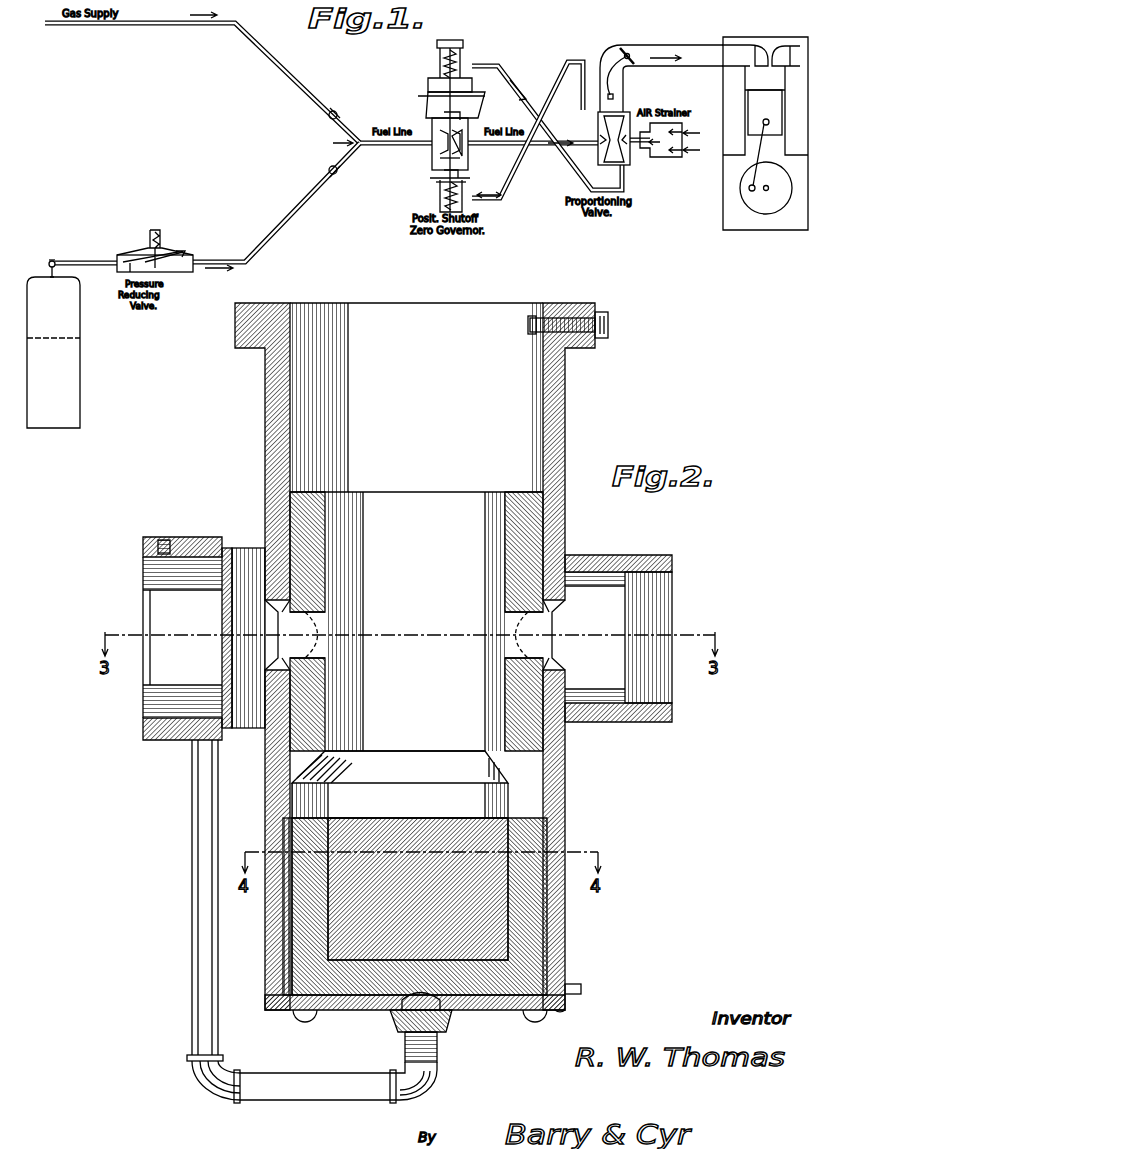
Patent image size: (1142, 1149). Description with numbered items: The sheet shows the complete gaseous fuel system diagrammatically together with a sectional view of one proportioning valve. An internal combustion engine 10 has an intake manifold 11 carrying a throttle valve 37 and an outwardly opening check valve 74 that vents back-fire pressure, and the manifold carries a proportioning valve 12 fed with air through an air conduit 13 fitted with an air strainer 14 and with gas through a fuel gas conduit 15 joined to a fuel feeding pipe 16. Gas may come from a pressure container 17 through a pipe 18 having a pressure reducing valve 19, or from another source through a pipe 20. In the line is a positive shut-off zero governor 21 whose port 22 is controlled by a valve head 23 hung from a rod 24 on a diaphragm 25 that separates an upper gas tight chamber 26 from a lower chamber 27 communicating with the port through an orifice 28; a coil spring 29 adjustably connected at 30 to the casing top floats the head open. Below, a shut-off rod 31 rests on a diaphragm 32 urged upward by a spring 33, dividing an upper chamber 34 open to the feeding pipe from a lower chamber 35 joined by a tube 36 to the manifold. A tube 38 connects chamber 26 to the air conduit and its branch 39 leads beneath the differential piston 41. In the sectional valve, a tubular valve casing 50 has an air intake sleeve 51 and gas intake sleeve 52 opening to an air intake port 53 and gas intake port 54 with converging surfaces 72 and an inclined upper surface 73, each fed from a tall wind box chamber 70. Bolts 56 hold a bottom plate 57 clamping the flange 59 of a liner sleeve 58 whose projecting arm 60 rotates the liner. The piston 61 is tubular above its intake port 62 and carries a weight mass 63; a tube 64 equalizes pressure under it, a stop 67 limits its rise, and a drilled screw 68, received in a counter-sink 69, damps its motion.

In FIG. 1, the internal combustion engine 10 is at (782, 37).
In FIG. 1, the intake manifold 11 is at (660, 48).
In FIG. 1, the proportioning valve 12 is at (598, 168).
In FIG. 1, the air conduit 13 is at (668, 158).
In FIG. 1, the air strainer 14 is at (702, 152).
In FIG. 1, the fuel gas conduit 15 is at (590, 134).
In FIG. 1, the fuel feeding pipe 16 is at (362, 145).
In FIG. 1, the pressure container 17 is at (82, 367).
In FIG. 1, the pipe 18 is at (270, 238).
In FIG. 1, the pressure reducing valve 19 is at (160, 262).
In FIG. 1, the pipe 20 is at (289, 75).
In FIG. 1, the positive shut-off zero governor 21 is at (425, 85).
In FIG. 1, the port 22 is at (458, 136).
In FIG. 1, the valve head 23 is at (440, 147).
In FIG. 1, the rod 24 is at (422, 97).
In FIG. 1, the diaphragm 25 is at (470, 88).
In FIG. 1, the upper gas tight chamber 26 is at (436, 78).
In FIG. 1, the lower chamber 27 is at (506, 80).
In FIG. 1, the orifice 28 is at (462, 116).
In FIG. 1, the coil spring 29 is at (460, 56).
In FIG. 1, the adjustable connection 30 is at (451, 40).
In FIG. 1, the shut-off rod 31 is at (446, 158).
In FIG. 1, the diaphragm 32 is at (464, 174).
In FIG. 1, the spring 33 is at (444, 188).
In FIG. 1, the upper chamber 34 is at (442, 194).
In FIG. 1, the lower chamber 35 is at (465, 212).
In FIG. 1, the tube 36 is at (520, 196).
In FIG. 1, the throttle valve 37 is at (612, 84).
In FIG. 1, the tube 38 is at (566, 173).
In FIG. 1, the branch 39 is at (630, 182).
In FIG. 1, the differential piston 41 is at (585, 66).
In FIG. 2, the tubular cylindrical valve casing 50 is at (566, 389).
In FIG. 2, the air intake sleeve 51 is at (216, 537).
In FIG. 2, the gas intake sleeve 52 is at (618, 555).
In FIG. 2, the air intake port 53 is at (282, 628).
In FIG. 2, the gas intake port 54 is at (560, 632).
In FIG. 2, the bolts 56 is at (290, 1018).
In FIG. 2, the bottom plate 57 is at (560, 1016).
In FIG. 2, the liner sleeve 58 is at (552, 918).
In FIG. 2, the flange 59 is at (272, 992).
In FIG. 2, the projecting arm 60 is at (580, 992).
In FIG. 2, the piston 61 is at (330, 546).
In FIG. 2, the intake port 62 is at (408, 788).
In FIG. 2, the weight mass 63 is at (420, 822).
In FIG. 2, the tube 64 is at (196, 976).
In FIG. 2, the stop 67 is at (578, 312).
In FIG. 2, the screw 68 is at (445, 1032).
In FIG. 2, the counter-sink 69 is at (395, 1008).
In FIG. 2, the wind box chamber 70 is at (250, 574).
In FIG. 2, the converging port surfaces 72 is at (300, 660).
In FIG. 2, the inclined upper surface 73 is at (385, 770).
In FIG. 1, the check valve 74 is at (628, 58).